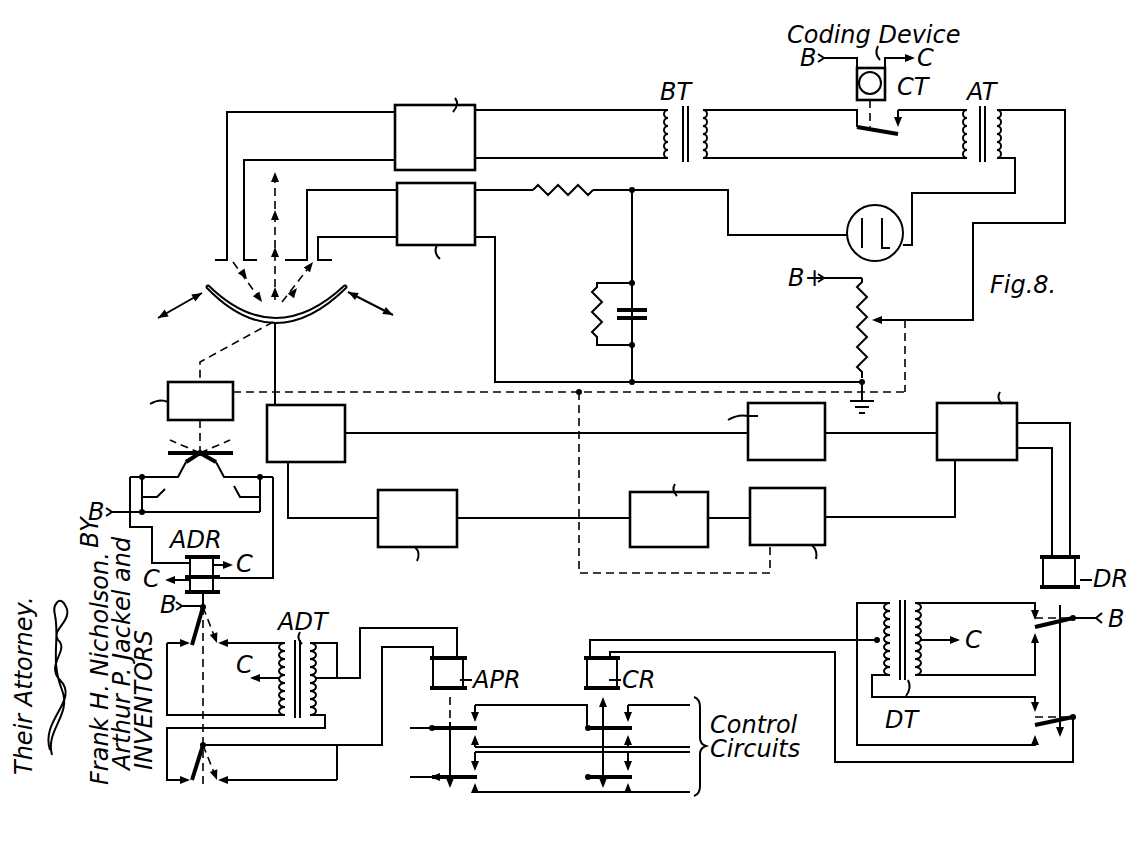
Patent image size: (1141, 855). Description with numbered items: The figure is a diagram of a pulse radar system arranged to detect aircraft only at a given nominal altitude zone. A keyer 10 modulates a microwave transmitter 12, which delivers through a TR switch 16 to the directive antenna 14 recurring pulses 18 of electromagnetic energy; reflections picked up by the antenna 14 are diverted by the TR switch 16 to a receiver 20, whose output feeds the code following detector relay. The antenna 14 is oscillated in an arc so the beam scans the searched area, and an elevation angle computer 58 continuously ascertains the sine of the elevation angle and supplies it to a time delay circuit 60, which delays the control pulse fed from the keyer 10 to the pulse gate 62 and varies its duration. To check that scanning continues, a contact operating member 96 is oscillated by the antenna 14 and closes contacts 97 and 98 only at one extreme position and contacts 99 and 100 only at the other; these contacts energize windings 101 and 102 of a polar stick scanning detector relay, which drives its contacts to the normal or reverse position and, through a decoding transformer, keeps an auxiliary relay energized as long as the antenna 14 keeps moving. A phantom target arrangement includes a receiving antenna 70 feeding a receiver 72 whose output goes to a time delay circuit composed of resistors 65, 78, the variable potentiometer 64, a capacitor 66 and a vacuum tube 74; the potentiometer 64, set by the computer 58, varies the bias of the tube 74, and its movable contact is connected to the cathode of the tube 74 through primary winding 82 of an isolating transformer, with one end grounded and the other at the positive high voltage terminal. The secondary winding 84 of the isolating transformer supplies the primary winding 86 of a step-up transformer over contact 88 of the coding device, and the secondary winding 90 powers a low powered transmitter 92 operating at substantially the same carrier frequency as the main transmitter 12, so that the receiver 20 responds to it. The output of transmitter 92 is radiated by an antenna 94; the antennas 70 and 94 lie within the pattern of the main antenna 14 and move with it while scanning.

The keyer 10 is at (630, 540).
The microwave transmitter 12 is at (457, 505).
The directive antenna 14 is at (323, 308).
The TR switch 16 is at (345, 455).
The recurring pulses of electromagnetic energy 18 is at (277, 195).
The receiver 20 is at (825, 452).
The elevation angle computer 58 is at (185, 382).
The time delay circuit 60 is at (825, 500).
The pulse gate 62 is at (970, 460).
The variable potentiometer 64 is at (856, 346).
The resistor 65 is at (565, 195).
The capacitor 66 is at (649, 314).
The receiving antenna 70 is at (332, 258).
The receiver 72 is at (397, 217).
The vacuum tube 74 is at (848, 220).
The resistor 78 is at (590, 318).
The primary winding of transformer AT 82 is at (1003, 137).
The secondary winding of transformer AT 84 is at (962, 148).
The primary winding of transformer BT 86 is at (710, 130).
The contact of coding device CT 88 is at (862, 136).
The secondary winding of transformer BT 90 is at (665, 140).
The low powered transmitter 92 is at (395, 141).
The antenna 94 is at (213, 261).
The contact operating member 96 is at (180, 448).
The contact 97 is at (172, 465).
The contact 98 is at (165, 492).
The contact 99 is at (224, 470).
The contact 100 is at (240, 500).
The winding of polar stick relay ADR 101 is at (215, 565).
The winding of polar stick relay ADR 102 is at (215, 585).